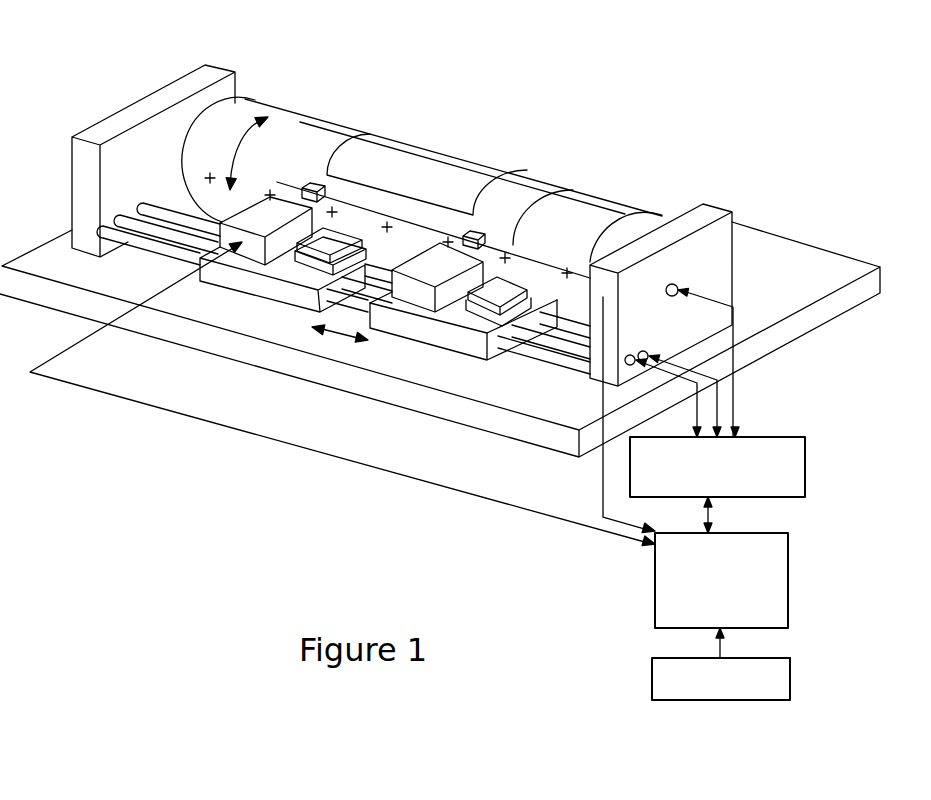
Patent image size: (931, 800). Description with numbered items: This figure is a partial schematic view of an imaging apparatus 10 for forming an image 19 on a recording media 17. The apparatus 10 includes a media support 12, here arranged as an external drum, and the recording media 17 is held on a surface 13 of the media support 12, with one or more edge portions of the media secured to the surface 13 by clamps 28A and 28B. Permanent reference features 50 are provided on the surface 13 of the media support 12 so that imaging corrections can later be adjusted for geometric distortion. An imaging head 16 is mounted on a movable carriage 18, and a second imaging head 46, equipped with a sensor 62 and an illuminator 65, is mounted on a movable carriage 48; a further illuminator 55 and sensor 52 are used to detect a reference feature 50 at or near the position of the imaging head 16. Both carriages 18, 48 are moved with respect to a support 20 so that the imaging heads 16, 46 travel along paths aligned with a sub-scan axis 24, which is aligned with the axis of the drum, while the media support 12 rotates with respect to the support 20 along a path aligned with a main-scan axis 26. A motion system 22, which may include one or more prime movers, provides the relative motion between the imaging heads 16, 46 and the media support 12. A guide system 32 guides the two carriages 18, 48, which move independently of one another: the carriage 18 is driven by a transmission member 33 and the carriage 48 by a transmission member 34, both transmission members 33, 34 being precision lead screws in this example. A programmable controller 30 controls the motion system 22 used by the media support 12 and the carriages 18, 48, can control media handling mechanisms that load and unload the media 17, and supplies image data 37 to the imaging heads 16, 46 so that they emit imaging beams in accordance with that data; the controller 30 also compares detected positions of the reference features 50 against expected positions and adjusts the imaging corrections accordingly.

The printing system 10 is at (352, 84).
The end wall / drum support 12 is at (632, 228).
The drum end clamp 13 is at (568, 210).
The first print head 16 is at (248, 255).
The drum 17 is at (338, 135).
The first carriage 18 is at (248, 286).
The print medium 19 is at (423, 167).
The base plate 20 is at (585, 408).
The motion system 22 is at (775, 447).
The carriage translation direction 24 is at (333, 330).
The drum rotation direction 26 is at (235, 148).
The first sensor 28A is at (472, 230).
The second sensor 28B is at (312, 186).
The controller 30 is at (667, 600).
The first guide rod 32 is at (537, 354).
The second guide rod 33 is at (560, 345).
The third guide rod 34 is at (583, 333).
The image data 37 is at (658, 693).
The second carriage 46 is at (380, 307).
The second print head 48 is at (423, 300).
The registration marks 50 is at (570, 275).
The first curing lamp 52 is at (312, 254).
The first lamp mount 55 is at (300, 262).
The second curing lamp 62 is at (497, 303).
The second carriage body 65 is at (418, 333).